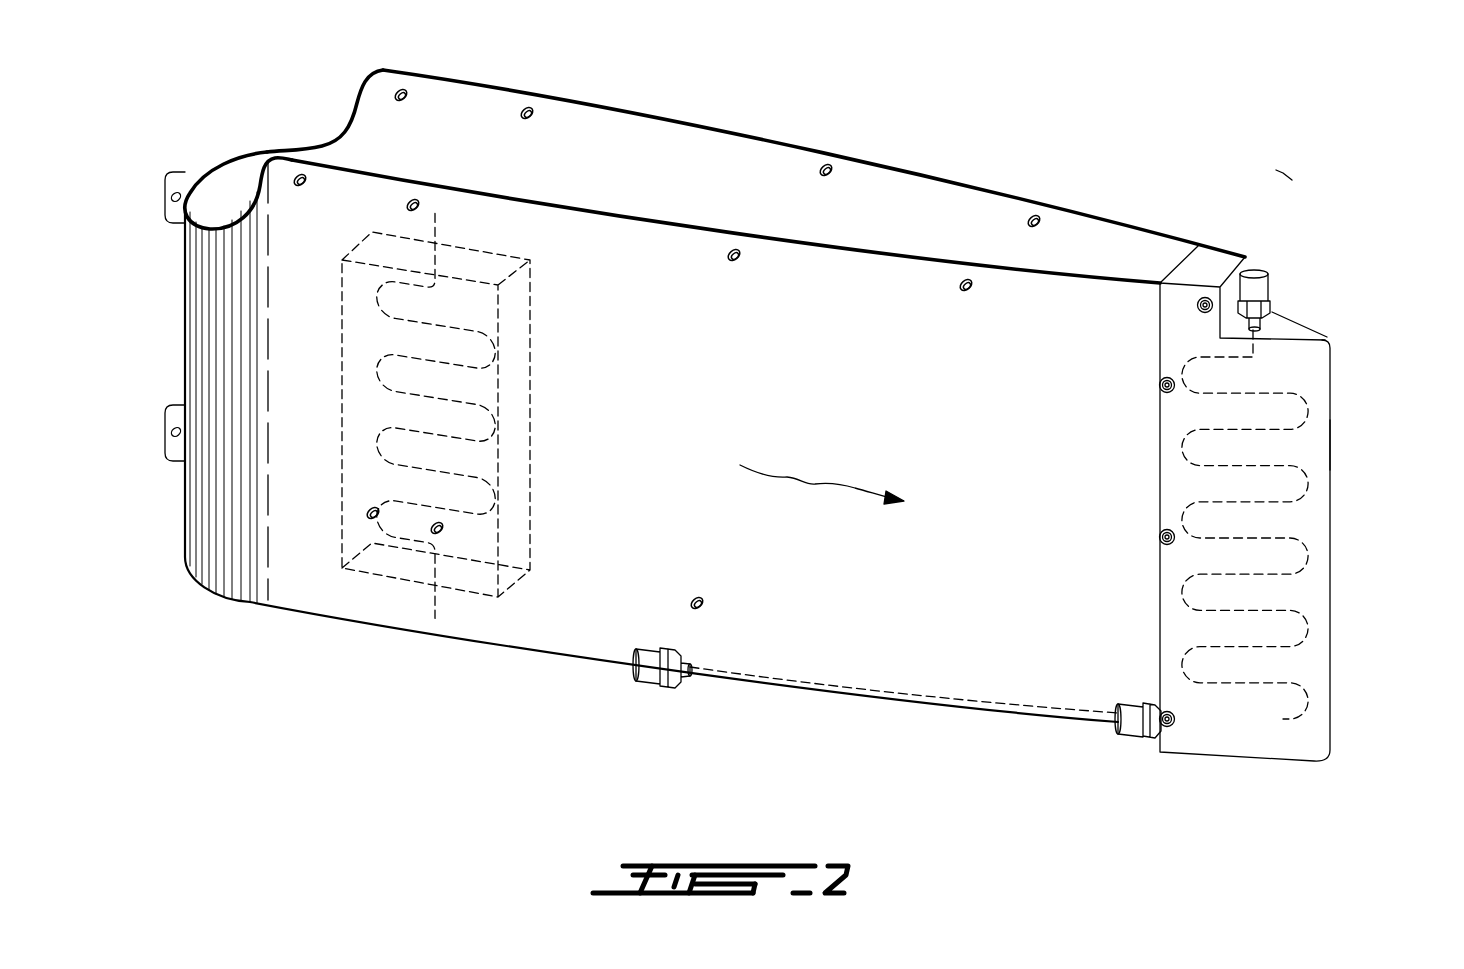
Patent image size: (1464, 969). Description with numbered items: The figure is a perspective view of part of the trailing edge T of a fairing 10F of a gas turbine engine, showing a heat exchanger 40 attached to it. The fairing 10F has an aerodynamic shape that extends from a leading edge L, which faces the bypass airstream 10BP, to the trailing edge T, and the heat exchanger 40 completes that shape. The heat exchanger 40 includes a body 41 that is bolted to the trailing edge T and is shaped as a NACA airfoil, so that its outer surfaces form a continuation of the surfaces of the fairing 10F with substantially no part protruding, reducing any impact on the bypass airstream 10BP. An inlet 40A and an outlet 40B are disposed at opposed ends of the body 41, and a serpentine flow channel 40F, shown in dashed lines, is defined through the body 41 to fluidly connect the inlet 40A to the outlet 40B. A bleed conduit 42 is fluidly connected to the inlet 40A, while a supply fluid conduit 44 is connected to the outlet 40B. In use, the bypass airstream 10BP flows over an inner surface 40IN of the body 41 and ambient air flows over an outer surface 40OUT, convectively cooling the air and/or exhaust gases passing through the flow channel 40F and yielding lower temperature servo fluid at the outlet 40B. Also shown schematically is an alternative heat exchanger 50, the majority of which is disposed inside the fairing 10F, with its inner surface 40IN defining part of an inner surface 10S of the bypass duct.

The trailing edge T is at (1093, 523).
The fairing 10F is at (1013, 417).
The leading edge L is at (185, 339).
The inner surface of the bypass duct 10S is at (410, 445).
The heat exchanger 50 is at (490, 256).
The bypass airstream 10BP is at (813, 483).
The bleed conduit 42 is at (810, 683).
The inlet 40A is at (1135, 737).
The heat exchanger 40 is at (1332, 373).
The outer surface 40OUT is at (1311, 336).
The outlet 40B is at (1262, 292).
The supply fluid conduit 44 is at (1252, 270).
The body 41 is at (1336, 442).
The serpentine flow channel 40F is at (1293, 480).
The inner surface 40IN is at (1327, 602).